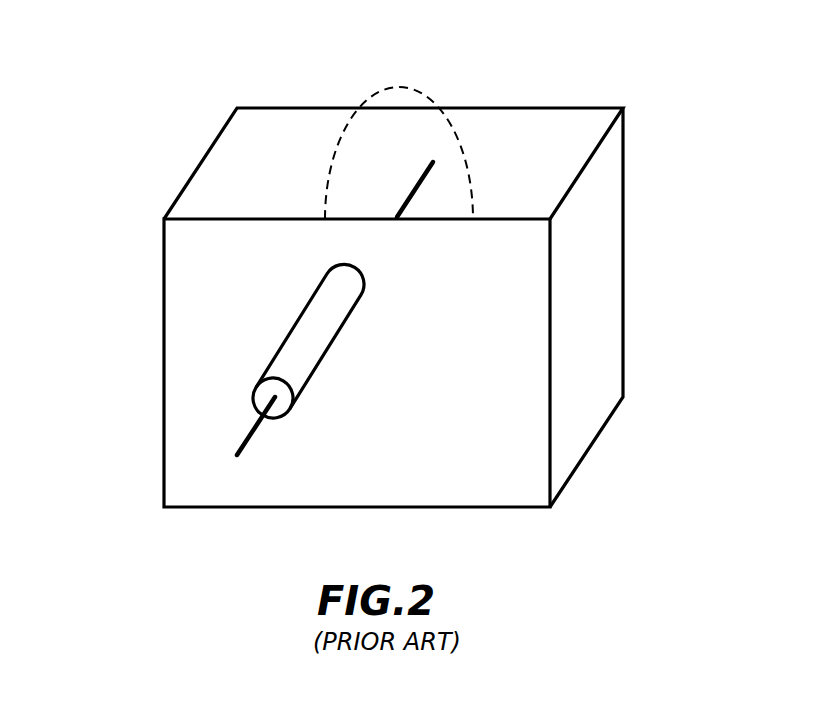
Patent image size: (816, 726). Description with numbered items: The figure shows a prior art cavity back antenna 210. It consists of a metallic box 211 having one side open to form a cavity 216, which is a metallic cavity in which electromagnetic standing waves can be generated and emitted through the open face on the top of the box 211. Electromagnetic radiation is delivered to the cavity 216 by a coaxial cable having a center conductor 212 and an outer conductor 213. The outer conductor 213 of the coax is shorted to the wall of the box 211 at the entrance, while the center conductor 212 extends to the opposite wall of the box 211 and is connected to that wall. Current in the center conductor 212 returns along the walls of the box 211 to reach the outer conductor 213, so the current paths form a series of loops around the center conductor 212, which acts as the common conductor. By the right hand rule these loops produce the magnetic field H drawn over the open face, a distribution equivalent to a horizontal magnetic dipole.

The cavity back antenna 210 is at (168, 143).
The metallic box 211 is at (486, 460).
The center conductor 212 is at (410, 195).
The outer conductor 213 is at (345, 313).
The cavity 216 is at (543, 157).
The magnetic field H is at (421, 88).